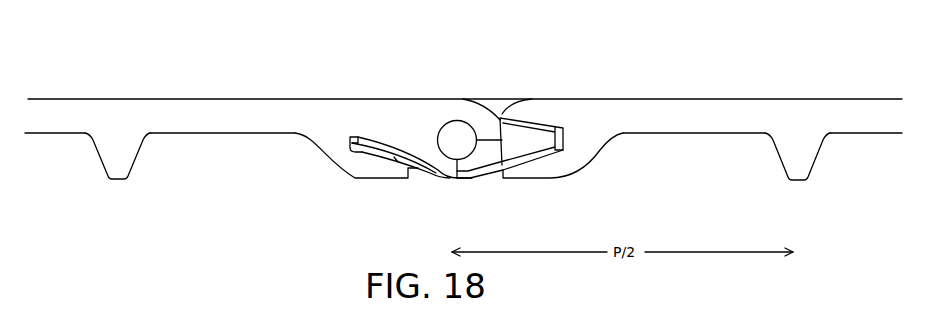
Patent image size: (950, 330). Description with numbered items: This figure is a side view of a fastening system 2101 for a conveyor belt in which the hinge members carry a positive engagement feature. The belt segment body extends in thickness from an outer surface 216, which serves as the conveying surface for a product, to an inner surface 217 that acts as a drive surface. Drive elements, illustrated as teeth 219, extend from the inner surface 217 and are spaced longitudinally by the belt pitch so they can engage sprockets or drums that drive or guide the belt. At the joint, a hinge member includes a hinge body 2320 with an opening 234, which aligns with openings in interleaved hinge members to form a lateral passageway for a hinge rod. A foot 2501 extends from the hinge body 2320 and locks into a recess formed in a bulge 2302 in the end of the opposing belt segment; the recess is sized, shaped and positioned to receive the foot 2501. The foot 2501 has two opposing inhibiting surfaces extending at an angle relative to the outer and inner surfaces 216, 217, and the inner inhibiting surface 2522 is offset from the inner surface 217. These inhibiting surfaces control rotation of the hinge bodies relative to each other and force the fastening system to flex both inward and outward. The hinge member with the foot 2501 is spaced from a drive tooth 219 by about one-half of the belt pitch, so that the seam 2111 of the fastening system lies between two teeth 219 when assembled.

The outer surface 216 is at (183, 97).
The inner surface 217 is at (225, 135).
The teeth 219 is at (135, 147).
The openings 234 is at (447, 148).
The fastening system 2101 is at (425, 192).
The seam 2111 is at (518, 83).
The bulge 2302 is at (553, 176).
The hinge body 2320 is at (440, 112).
The foot 2501 is at (520, 141).
The inner inhibiting surface 2522 is at (490, 174).